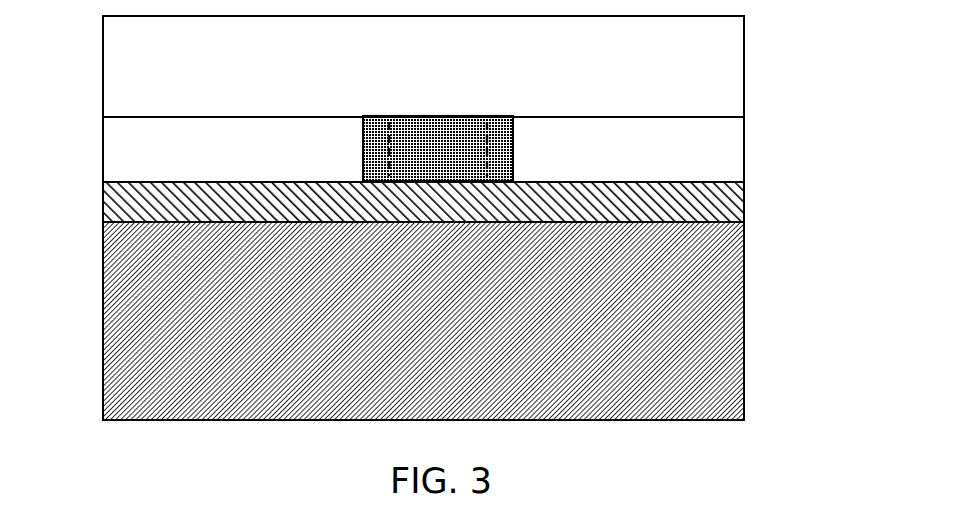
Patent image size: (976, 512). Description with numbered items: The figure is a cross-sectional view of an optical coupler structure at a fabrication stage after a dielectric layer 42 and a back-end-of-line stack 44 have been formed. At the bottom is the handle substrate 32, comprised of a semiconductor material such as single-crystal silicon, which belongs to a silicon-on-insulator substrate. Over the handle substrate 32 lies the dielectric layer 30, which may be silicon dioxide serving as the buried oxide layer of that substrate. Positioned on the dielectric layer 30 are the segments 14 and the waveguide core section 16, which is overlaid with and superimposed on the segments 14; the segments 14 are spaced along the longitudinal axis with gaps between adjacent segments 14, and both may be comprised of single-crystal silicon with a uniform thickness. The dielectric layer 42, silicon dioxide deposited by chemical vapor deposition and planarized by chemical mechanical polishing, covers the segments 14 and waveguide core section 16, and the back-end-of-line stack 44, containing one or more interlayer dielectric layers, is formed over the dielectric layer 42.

The segments 14 is at (365, 143).
The waveguide core section 16 is at (445, 141).
The dielectric layer 30 is at (700, 203).
The handle substrate 32 is at (132, 340).
The dielectric layer 42 is at (120, 143).
The back-end-of-line stack 44 is at (700, 62).